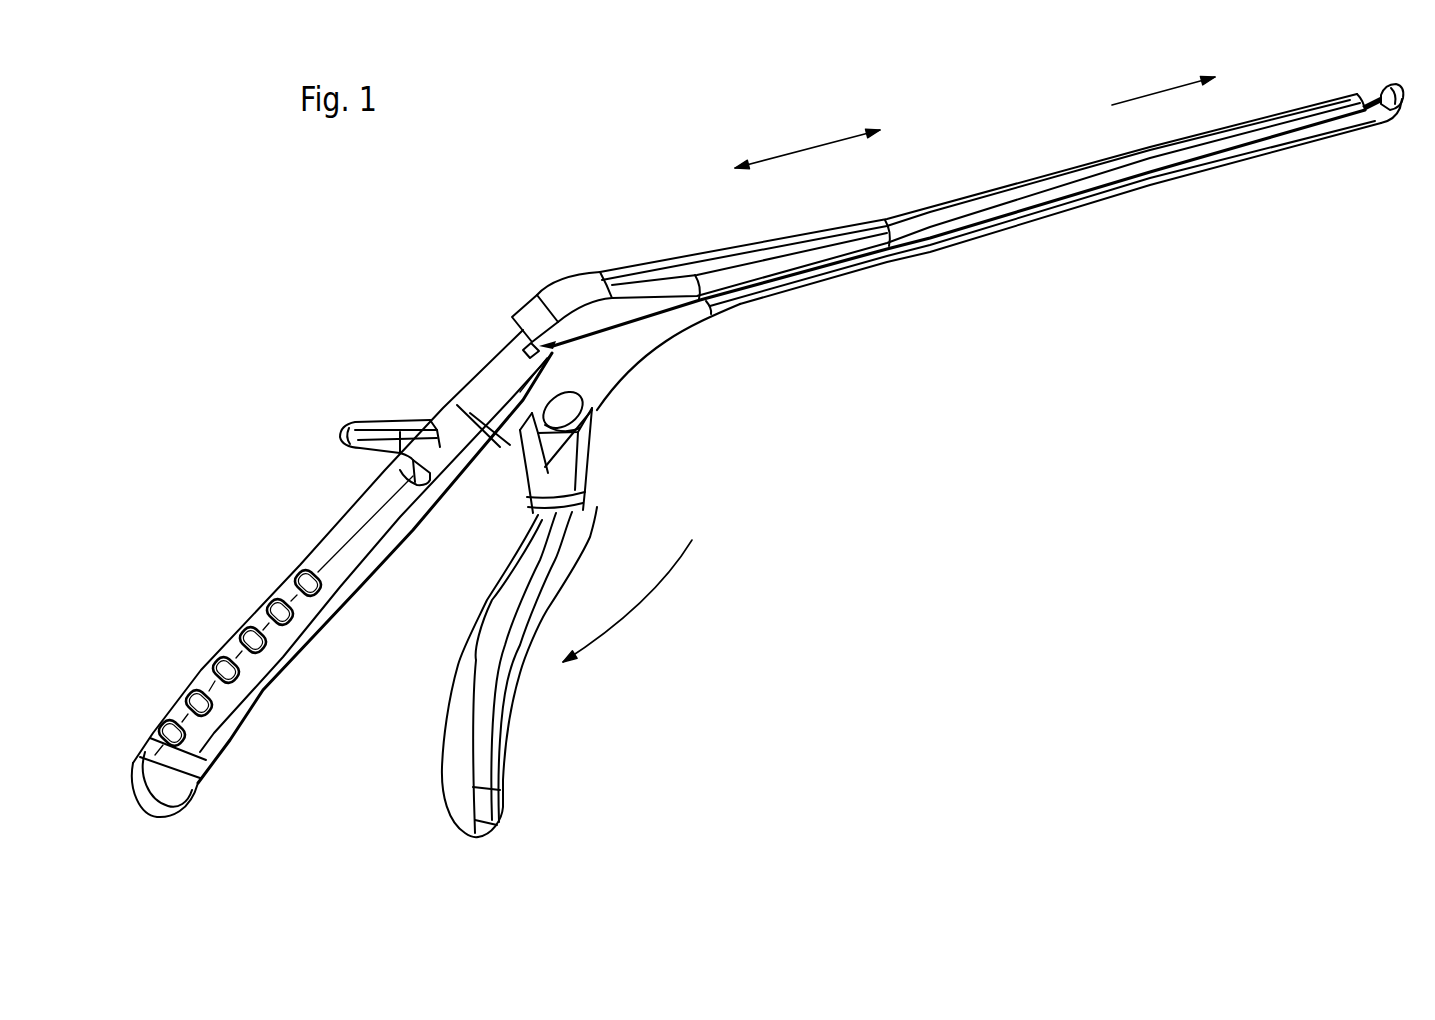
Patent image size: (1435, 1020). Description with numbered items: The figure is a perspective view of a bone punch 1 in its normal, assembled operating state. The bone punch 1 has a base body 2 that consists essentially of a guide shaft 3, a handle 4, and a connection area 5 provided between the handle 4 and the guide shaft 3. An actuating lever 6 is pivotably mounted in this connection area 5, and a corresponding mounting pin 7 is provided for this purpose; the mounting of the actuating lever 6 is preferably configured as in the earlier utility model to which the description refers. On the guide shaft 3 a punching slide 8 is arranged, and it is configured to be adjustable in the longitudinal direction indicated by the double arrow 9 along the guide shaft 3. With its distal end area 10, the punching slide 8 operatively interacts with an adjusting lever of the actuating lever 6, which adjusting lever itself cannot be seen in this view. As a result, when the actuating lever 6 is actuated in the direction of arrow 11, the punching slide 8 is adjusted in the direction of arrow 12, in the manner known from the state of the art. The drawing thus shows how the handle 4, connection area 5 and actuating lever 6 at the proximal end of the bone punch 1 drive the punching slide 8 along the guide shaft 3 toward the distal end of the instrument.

The bone punch 1 is at (847, 430).
The base body 2 is at (473, 386).
The guide shaft 3 is at (1043, 210).
The handle 4 is at (283, 657).
The connection area 5 is at (612, 363).
The actuating lever 6 is at (500, 698).
The mounting pin 7 is at (571, 416).
The punching slide 8 is at (1032, 185).
The double arrow 9 is at (808, 148).
The distal end area 10 is at (587, 283).
The arrow 11 is at (640, 603).
The arrow 12 is at (1160, 88).